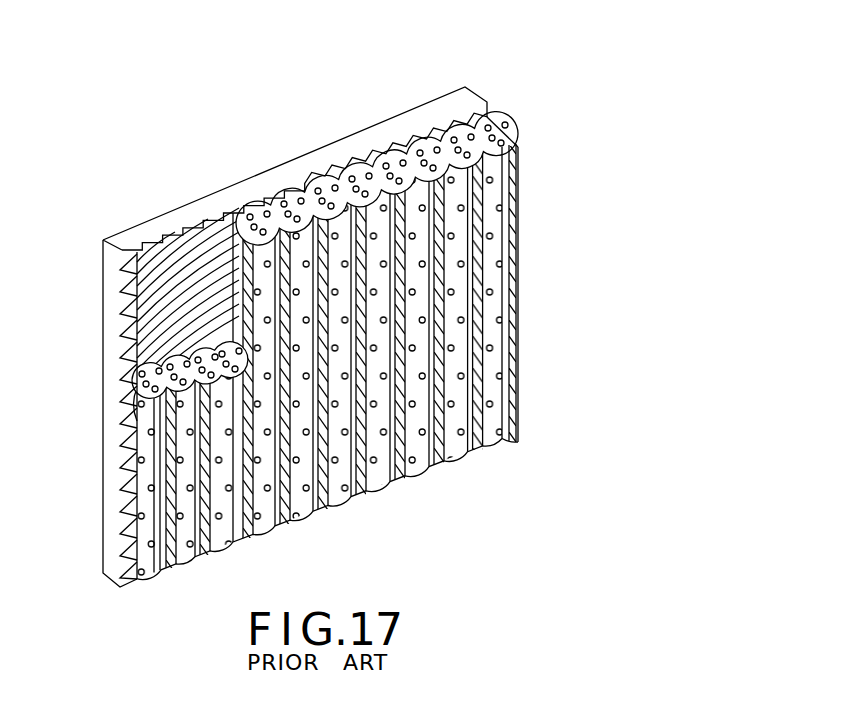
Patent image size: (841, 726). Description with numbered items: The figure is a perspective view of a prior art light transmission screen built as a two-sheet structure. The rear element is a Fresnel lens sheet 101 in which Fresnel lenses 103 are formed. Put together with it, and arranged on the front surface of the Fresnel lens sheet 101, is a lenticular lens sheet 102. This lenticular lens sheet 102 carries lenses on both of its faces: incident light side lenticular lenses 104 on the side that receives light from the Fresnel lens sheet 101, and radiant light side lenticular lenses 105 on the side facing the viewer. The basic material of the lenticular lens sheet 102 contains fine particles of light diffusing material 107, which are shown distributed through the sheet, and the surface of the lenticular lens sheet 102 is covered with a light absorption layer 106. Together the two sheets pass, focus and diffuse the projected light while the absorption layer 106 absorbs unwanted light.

The Fresnel lens sheet 101 is at (442, 105).
The lenticular lens sheet 102 is at (519, 142).
The Fresnel lenses 103 is at (422, 132).
The incident light side lenticular lenses 104 is at (390, 155).
The radiant light side lenticular lenses 105 is at (452, 460).
The light absorption layer 106 is at (519, 207).
The fine particles of light diffusing material 107 is at (498, 146).